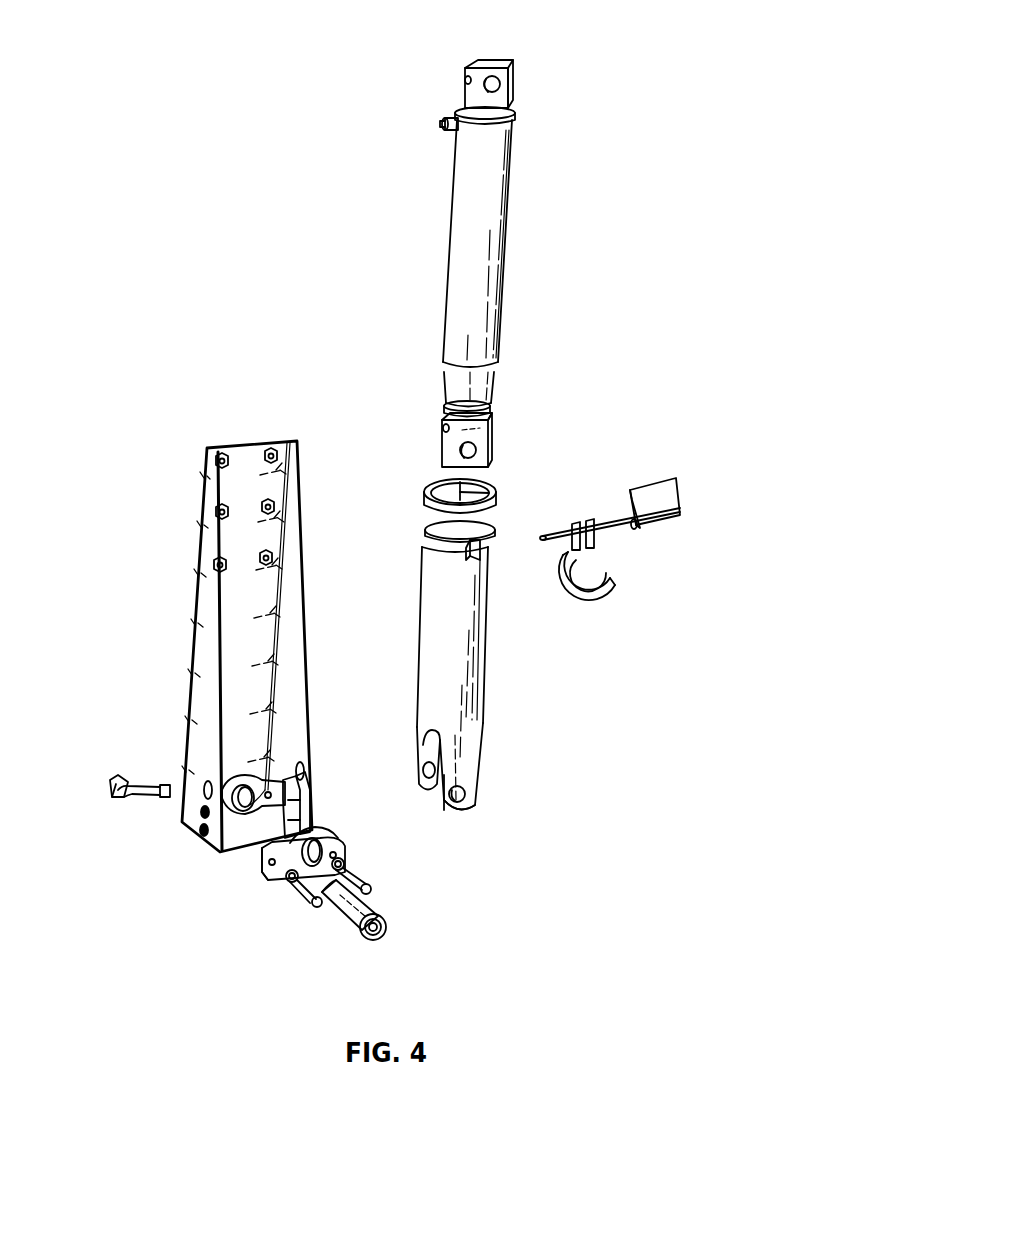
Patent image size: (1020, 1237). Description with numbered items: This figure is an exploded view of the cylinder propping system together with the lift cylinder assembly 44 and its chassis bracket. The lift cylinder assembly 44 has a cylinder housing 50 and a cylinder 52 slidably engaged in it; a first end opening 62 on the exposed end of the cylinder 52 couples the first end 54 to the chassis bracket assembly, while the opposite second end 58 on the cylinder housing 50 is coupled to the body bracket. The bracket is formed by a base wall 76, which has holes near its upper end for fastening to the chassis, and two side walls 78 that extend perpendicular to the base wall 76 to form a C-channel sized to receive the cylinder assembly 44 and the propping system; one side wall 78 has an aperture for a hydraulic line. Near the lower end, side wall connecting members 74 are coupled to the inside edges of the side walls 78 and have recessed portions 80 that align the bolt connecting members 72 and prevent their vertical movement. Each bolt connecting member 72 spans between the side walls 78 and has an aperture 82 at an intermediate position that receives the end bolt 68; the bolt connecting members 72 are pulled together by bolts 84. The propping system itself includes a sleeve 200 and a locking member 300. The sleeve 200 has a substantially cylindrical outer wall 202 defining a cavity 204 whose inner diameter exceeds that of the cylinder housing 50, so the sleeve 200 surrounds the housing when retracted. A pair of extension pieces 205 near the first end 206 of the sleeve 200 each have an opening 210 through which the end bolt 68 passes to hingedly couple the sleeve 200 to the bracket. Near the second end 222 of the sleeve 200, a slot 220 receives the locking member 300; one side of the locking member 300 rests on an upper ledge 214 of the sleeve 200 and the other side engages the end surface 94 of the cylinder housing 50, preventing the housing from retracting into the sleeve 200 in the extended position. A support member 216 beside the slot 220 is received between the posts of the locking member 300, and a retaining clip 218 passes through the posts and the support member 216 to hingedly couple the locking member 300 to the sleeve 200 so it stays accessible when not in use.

The lift cylinder assembly 44 is at (486, 236).
The cylinder housing 50 is at (500, 208).
The cylinder 52 is at (446, 385).
The first end 54 is at (494, 420).
The second end 58 is at (462, 80).
The first end opening 62 is at (492, 84).
The end bolt 68 is at (372, 942).
The bolt connecting member 72 is at (306, 879).
The side wall connecting member 74 is at (265, 820).
The base wall 76 is at (250, 450).
The side wall 78 is at (211, 620).
The recessed portion 80 is at (305, 810).
The aperture 82 is at (322, 840).
The bolt 84 is at (302, 895).
The end surface 94 is at (490, 404).
The sleeve 200 is at (456, 659).
The outer wall 202 is at (490, 625).
The cavity 204 is at (482, 486).
The extension piece 205 is at (440, 812).
The first end 206 is at (468, 772).
The opening 210 is at (466, 800).
The upper ledge 214 is at (623, 530).
The support member 216 is at (480, 553).
The retaining clip 218 is at (680, 492).
The slot 220 is at (422, 527).
The second end 222 is at (432, 472).
The locking member 300 is at (620, 582).